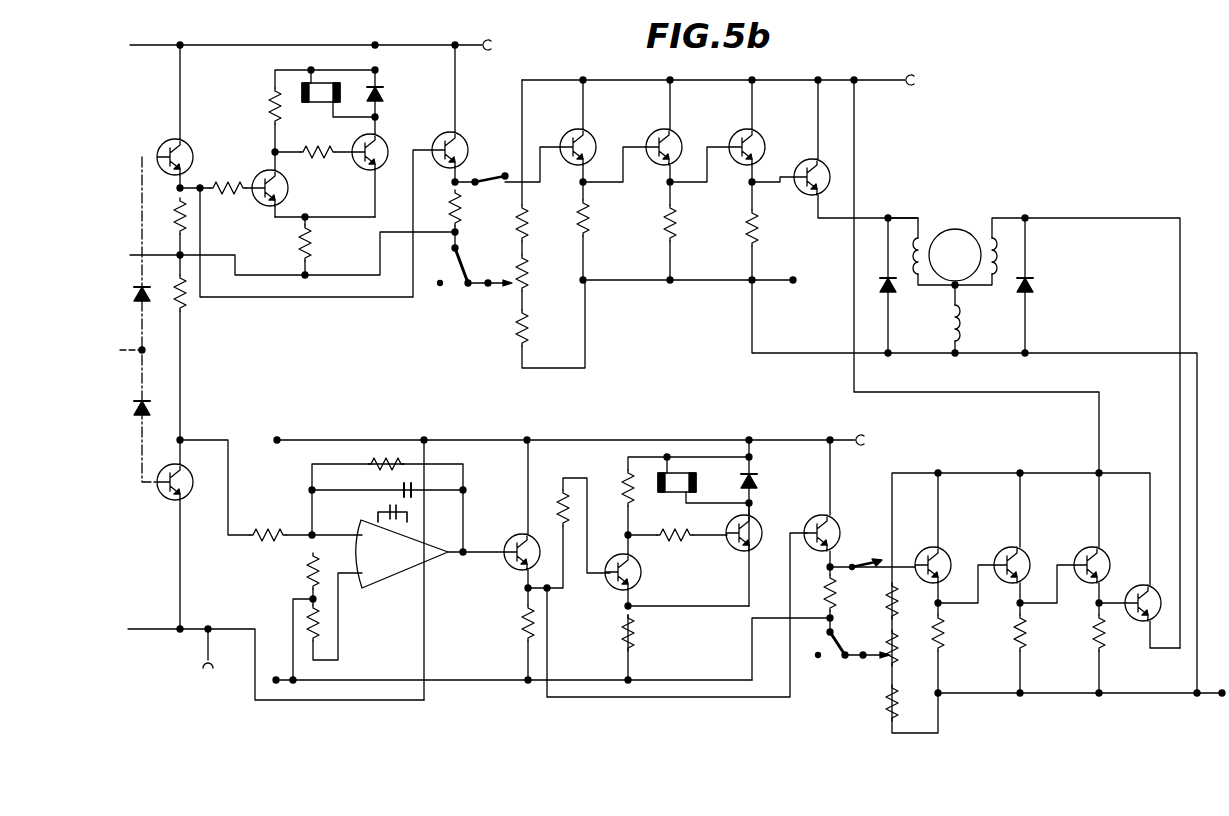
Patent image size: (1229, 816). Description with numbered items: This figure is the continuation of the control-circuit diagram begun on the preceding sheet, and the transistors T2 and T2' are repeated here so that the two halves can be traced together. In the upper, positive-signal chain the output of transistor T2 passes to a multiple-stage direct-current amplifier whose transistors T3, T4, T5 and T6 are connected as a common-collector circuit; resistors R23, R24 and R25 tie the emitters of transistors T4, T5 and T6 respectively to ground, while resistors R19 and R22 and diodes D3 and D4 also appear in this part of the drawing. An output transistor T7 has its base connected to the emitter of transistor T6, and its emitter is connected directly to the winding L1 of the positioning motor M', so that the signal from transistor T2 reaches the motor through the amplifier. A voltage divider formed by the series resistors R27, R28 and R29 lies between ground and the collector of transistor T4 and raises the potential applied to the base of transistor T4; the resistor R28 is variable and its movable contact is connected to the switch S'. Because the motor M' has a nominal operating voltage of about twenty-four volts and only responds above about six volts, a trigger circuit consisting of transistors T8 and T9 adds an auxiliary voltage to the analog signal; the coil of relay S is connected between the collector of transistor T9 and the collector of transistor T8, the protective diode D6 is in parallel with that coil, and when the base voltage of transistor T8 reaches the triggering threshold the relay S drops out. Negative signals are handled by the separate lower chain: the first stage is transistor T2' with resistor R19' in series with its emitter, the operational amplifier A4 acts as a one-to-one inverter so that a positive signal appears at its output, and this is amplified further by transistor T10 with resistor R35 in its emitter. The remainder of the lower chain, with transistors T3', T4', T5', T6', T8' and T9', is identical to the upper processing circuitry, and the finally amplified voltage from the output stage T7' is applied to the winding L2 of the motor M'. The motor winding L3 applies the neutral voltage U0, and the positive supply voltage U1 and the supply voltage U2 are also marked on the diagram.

The transistor T2 is at (169, 116).
The transistor T8 is at (261, 180).
The transistor T9 is at (381, 163).
The transistor T3 is at (462, 113).
The transistor T4 is at (591, 131).
The transistor T5 is at (677, 131).
The transistor T6 is at (759, 131).
The output transistor T7 is at (856, 149).
The resistor R19 is at (212, 220).
The resistor R19' is at (212, 302).
The resistor R22 is at (462, 207).
The resistor R27 is at (528, 222).
The variable voltage dividing resistor R28 is at (528, 272).
The resistor R29 is at (528, 330).
The resistor R23 is at (590, 224).
The resistor R24 is at (677, 224).
The resistor R25 is at (758, 232).
The resistor R35 is at (522, 624).
The diode D3 is at (156, 288).
The diode D4 is at (168, 380).
The protective diode D6 is at (383, 90).
The relay S is at (524, 298).
The switch S' is at (662, 467).
The positioning motor M' is at (955, 238).
The winding L1 is at (921, 251).
The winding L2 is at (1067, 433).
The motor winding L3 is at (964, 323).
The operational amplifier A4 is at (398, 569).
The transistor T10 is at (516, 539).
The transistor T2' is at (165, 534).
The transistor T8' is at (609, 577).
The transistor T9' is at (733, 554).
The transistor T3' is at (839, 503).
The transistor T4' is at (948, 538).
The transistor T5' is at (1027, 538).
The transistor T6' is at (1106, 538).
The output stage T7' is at (1146, 622).
The positive voltage U1 is at (736, 81).
The supply voltage terminal U2 is at (586, 441).
The neutral voltage U0 is at (906, 499).